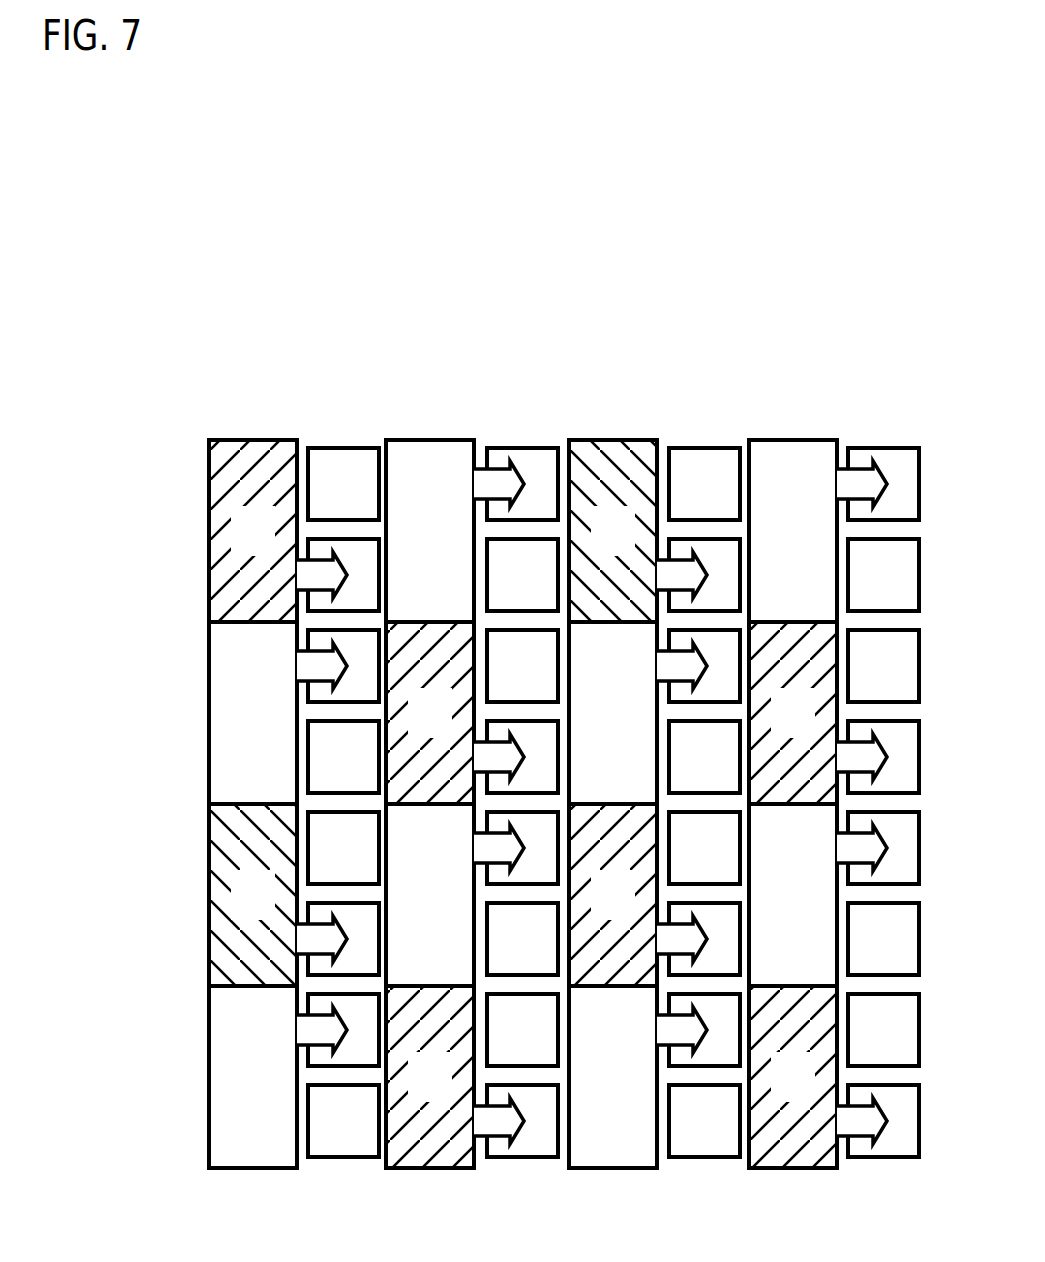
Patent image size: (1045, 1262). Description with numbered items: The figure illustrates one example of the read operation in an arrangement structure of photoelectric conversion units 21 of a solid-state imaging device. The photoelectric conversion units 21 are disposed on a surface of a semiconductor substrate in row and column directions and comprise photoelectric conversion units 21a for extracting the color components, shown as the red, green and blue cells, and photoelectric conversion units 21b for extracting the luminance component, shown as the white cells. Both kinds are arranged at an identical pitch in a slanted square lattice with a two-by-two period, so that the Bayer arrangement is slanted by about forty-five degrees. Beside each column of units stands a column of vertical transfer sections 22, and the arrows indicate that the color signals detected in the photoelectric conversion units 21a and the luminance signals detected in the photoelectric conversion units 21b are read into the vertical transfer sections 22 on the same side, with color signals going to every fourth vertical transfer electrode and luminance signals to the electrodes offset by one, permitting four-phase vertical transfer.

The photoelectric conversion units 21 is at (523, 668).
The photoelectric conversion unit for extracting color components 21a is at (248, 443).
The photoelectric conversion unit for extracting luminance component 21b is at (433, 440).
The vertical transfer section 22 is at (349, 414).